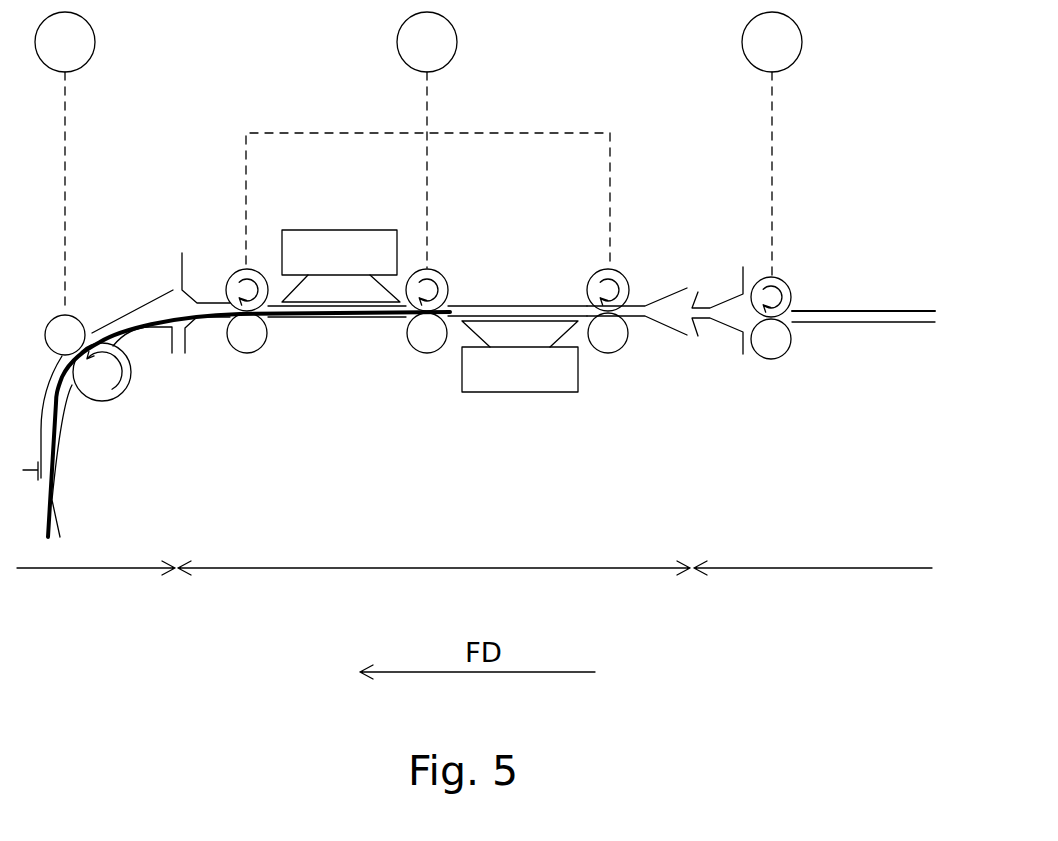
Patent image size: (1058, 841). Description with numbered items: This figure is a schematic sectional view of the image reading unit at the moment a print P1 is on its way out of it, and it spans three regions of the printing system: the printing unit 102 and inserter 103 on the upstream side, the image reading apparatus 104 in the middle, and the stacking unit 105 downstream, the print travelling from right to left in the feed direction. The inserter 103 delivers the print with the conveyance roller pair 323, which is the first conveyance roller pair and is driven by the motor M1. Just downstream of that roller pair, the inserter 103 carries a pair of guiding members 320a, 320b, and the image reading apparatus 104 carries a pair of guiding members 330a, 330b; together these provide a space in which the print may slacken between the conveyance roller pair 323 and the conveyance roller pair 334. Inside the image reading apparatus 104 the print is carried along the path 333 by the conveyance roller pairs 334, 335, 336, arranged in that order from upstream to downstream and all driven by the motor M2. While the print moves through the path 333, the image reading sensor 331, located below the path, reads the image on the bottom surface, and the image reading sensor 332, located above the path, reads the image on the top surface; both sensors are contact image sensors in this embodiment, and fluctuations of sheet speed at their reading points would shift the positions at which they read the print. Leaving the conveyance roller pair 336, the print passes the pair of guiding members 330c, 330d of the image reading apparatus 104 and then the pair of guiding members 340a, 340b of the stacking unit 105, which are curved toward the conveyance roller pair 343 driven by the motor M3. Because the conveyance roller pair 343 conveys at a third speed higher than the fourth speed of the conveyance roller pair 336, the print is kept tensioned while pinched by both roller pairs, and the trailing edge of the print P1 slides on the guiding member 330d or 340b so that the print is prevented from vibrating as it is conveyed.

The motor M1 is at (772, 143).
The motor M2 is at (428, 140).
The motor M3 is at (65, 161).
The print P1 is at (88, 332).
The printing unit 102 is at (813, 555).
The inserter 103 is at (813, 555).
The image reading apparatus 104 is at (434, 555).
The stacking unit 105 is at (96, 554).
The guiding member 320a is at (732, 292).
The guiding member 320b is at (723, 322).
The conveyance roller pair 323 is at (792, 348).
The guiding member 330a is at (672, 288).
The guiding member 330b is at (666, 332).
The guiding member 330c is at (203, 302).
The guiding member 330d is at (197, 326).
The image reading sensor 331 is at (553, 393).
The image reading sensor 332 is at (341, 229).
The path 333 is at (480, 304).
The conveyance roller pair 334 is at (610, 354).
The conveyance roller pair 335 is at (405, 343).
The conveyance roller pair 336 is at (243, 354).
The guiding member 340a is at (143, 302).
The guiding member 340b is at (148, 330).
The conveyance roller pair 343 is at (100, 402).